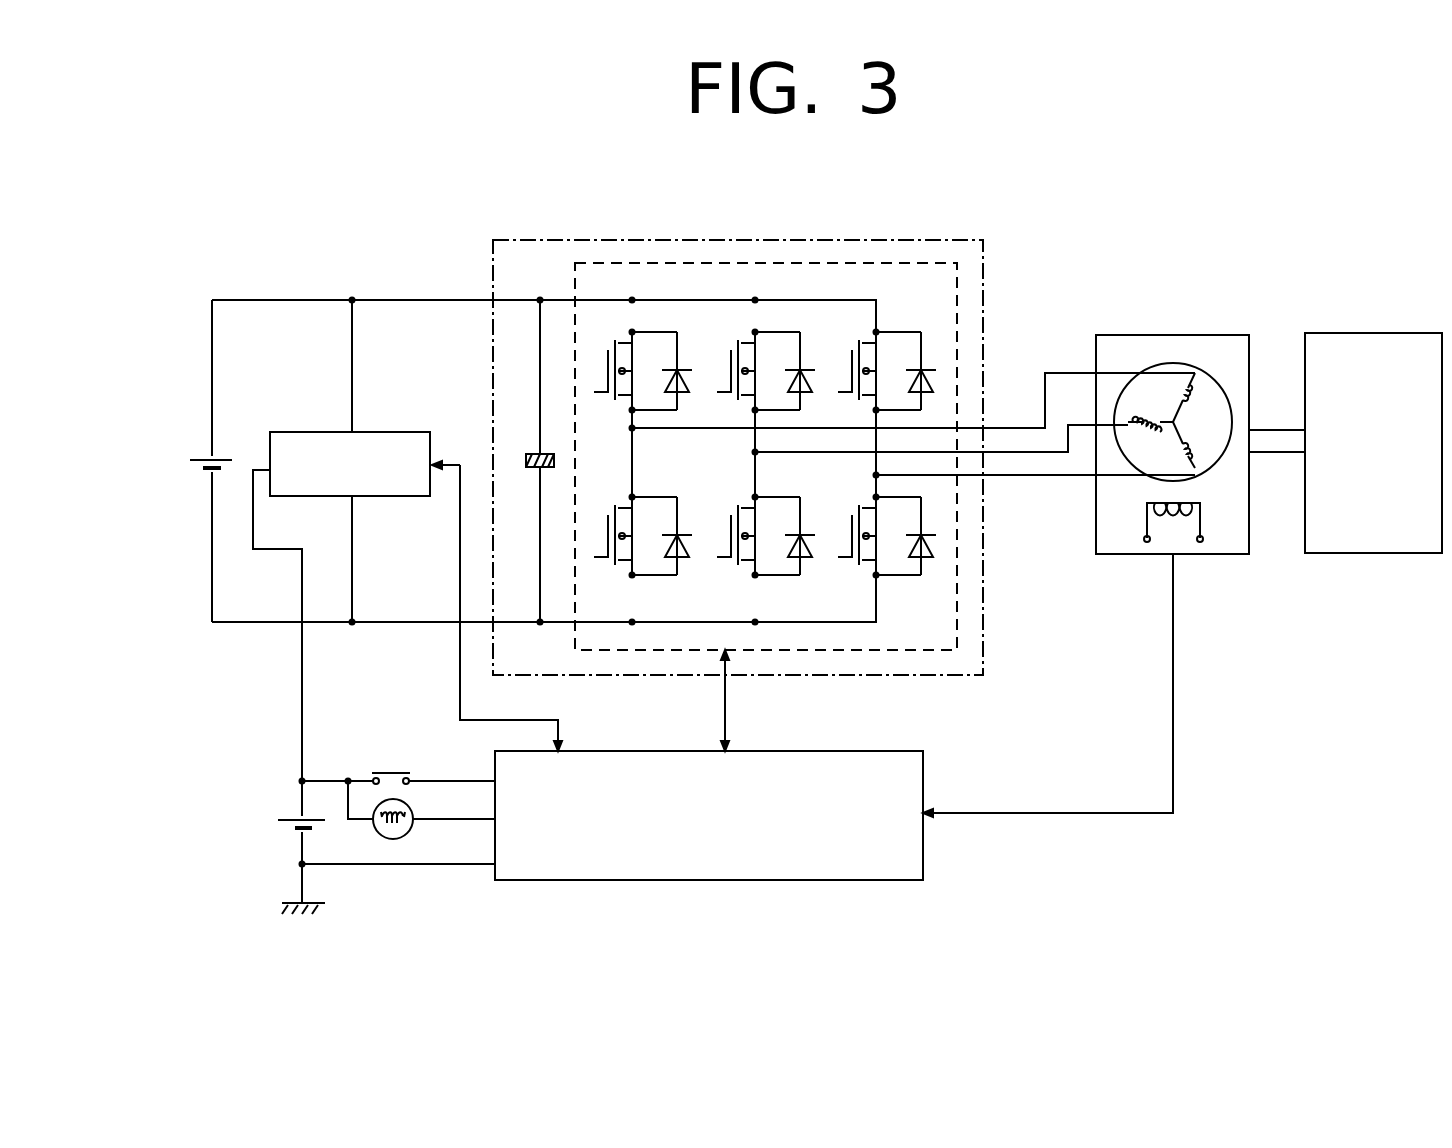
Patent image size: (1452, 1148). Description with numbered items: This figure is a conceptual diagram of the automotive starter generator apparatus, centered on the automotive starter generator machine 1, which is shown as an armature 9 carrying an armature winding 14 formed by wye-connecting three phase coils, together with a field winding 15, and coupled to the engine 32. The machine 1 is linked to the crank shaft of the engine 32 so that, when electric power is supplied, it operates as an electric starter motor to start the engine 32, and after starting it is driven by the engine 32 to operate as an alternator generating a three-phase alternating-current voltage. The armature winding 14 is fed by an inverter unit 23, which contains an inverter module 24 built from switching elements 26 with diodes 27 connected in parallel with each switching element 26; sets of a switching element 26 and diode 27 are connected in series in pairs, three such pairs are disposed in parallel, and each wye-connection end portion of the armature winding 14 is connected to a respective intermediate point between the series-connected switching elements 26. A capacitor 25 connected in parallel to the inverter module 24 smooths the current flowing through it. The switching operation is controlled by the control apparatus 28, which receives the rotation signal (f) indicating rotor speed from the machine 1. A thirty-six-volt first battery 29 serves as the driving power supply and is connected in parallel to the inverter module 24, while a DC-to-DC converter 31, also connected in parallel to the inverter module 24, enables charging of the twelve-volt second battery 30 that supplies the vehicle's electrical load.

The automotive starter generator machine 1 is at (1198, 421).
The armature 9 is at (1215, 387).
The armature winding 14 is at (1192, 430).
The field winding 15 is at (1205, 513).
The inverter unit 23 is at (993, 250).
The inverter module 24 is at (960, 318).
The capacitor 25 is at (532, 448).
The switching element 26 is at (608, 335).
The diode 27 is at (692, 352).
The control apparatus 28 is at (930, 762).
The first battery 29 is at (192, 440).
The second battery 30 is at (285, 806).
The DC-to-DC converter 31 is at (307, 427).
The engine 32 is at (1387, 323).